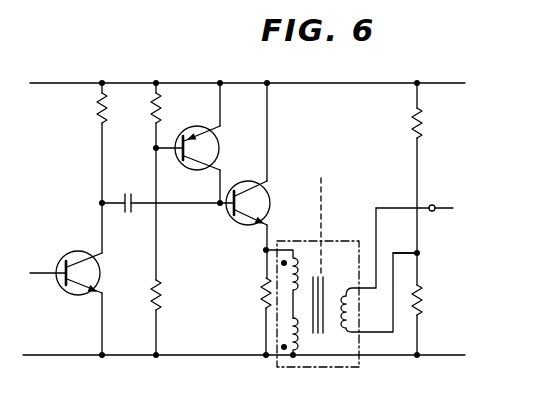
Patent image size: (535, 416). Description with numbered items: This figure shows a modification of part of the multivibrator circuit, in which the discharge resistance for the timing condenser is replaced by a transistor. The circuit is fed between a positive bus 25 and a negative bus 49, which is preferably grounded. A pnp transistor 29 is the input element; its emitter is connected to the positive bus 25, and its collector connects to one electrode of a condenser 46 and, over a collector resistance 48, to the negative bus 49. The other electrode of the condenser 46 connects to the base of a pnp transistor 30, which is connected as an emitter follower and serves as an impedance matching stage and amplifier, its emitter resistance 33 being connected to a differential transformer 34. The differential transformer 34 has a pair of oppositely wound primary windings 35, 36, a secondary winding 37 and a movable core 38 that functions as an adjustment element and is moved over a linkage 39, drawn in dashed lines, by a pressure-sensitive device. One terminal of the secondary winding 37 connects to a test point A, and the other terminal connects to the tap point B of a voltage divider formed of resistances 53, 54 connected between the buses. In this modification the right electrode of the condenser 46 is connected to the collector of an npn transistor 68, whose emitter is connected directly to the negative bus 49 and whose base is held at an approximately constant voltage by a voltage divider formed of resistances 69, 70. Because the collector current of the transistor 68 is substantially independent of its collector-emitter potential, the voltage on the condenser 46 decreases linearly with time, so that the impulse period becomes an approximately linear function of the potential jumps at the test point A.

The positive bus 25 is at (178, 358).
The transistor 29 is at (99, 285).
The transistor 30 is at (270, 196).
The emitter resistance 33 is at (262, 299).
The differential transformer 34 is at (321, 280).
The primary winding 35 is at (290, 268).
The primary winding 36 is at (296, 353).
The secondary winding 37 is at (350, 306).
The movable core 38 is at (321, 277).
The linkage 39 is at (322, 198).
The condenser 46 is at (130, 213).
The collector resistance 48 is at (100, 108).
The negative bus 49 is at (316, 86).
The resistance 53 is at (422, 120).
The resistance 54 is at (422, 300).
The npn transistor 68 is at (219, 146).
The resistance 69 is at (153, 117).
The resistance 70 is at (164, 285).
The test point A is at (434, 200).
The tap point B is at (419, 252).